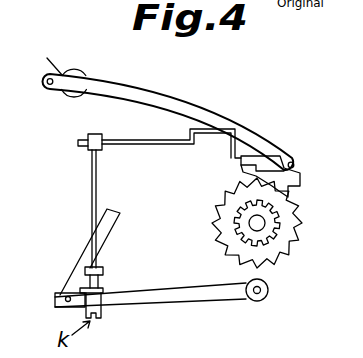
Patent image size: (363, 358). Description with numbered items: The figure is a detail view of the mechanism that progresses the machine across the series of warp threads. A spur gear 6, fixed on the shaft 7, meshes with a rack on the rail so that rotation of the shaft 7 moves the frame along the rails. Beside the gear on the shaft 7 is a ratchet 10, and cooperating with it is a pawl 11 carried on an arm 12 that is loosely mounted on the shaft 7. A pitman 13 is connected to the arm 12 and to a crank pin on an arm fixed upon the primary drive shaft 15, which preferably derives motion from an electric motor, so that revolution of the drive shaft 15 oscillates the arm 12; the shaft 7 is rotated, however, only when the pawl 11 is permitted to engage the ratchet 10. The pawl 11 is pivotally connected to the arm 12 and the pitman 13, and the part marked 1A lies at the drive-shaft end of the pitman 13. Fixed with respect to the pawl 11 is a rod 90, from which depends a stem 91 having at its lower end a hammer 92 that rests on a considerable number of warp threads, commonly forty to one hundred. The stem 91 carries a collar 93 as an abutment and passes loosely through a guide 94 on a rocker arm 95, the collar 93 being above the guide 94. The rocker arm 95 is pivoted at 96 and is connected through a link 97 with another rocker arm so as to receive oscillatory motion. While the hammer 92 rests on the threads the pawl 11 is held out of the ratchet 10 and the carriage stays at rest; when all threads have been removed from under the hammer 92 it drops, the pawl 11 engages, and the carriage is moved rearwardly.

The roller support 1A is at (45, 55).
The primary drive shaft 15 is at (78, 72).
The pitman 13 is at (177, 103).
The pawl 11 is at (270, 163).
The arm 12 is at (292, 178).
The ratchet 10 is at (293, 222).
The shaft 7 is at (259, 223).
The spur gear 6 is at (265, 232).
The rod 90 is at (158, 147).
The stem 91 is at (98, 197).
The link 97 is at (118, 218).
The collar 93 is at (107, 272).
The guide 94 is at (105, 290).
The hammer 92 is at (105, 309).
The rocker arm 95 is at (202, 296).
The pivot 96 is at (268, 291).